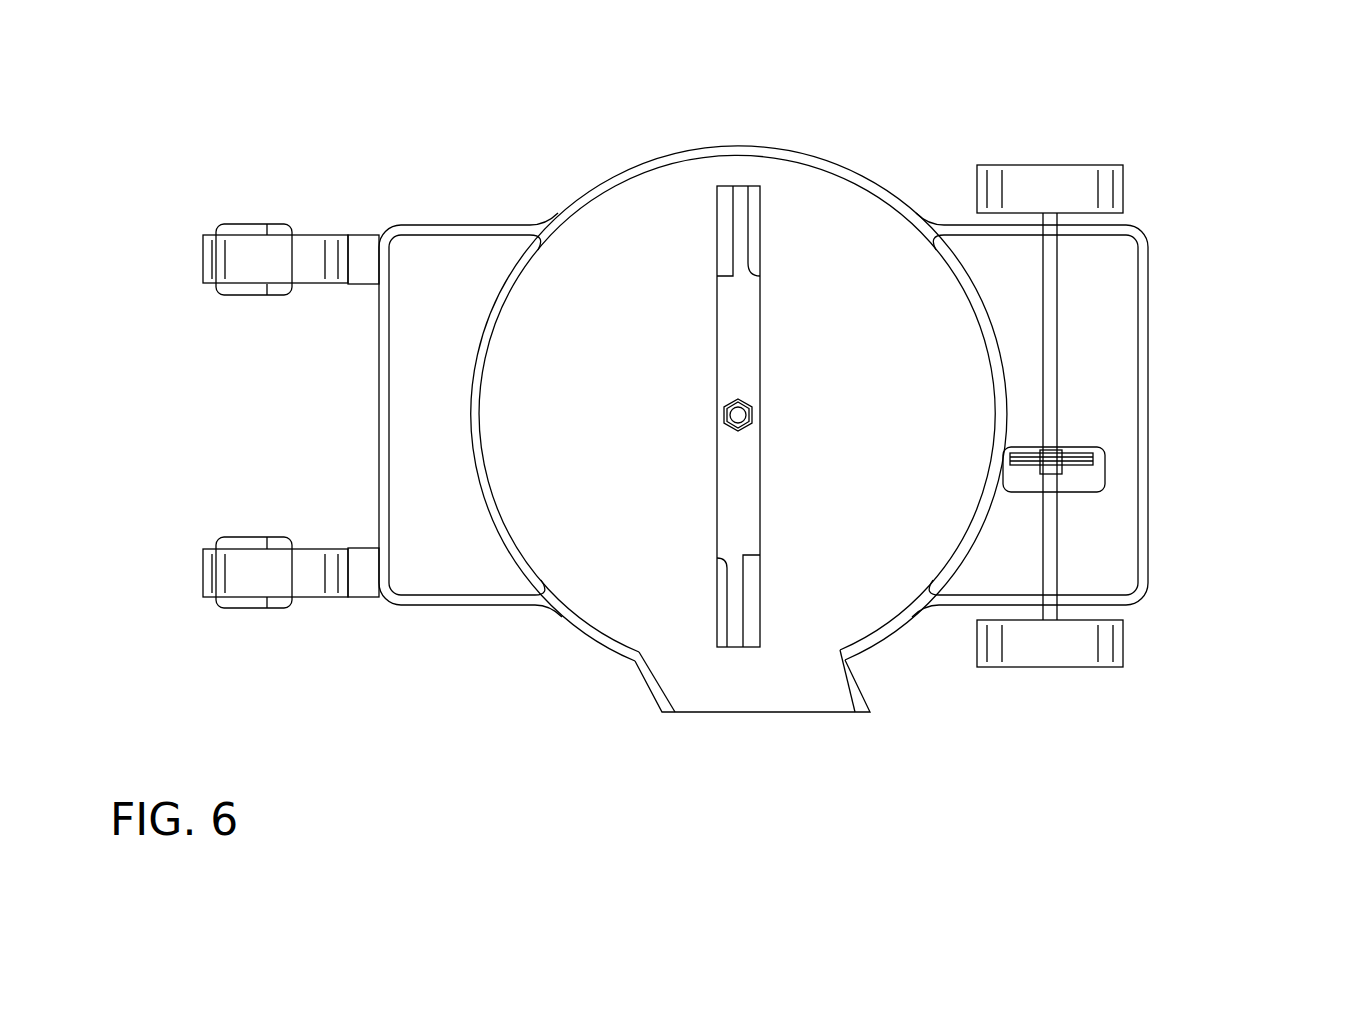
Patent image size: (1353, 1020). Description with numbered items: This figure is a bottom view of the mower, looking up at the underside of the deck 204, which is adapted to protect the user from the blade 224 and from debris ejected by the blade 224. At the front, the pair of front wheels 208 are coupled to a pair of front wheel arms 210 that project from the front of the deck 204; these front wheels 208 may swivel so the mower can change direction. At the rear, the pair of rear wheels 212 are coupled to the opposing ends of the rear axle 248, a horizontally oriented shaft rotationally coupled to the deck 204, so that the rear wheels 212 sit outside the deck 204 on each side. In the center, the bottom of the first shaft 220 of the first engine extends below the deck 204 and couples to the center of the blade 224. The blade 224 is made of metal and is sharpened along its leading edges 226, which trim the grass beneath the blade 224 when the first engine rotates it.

The deck 204 is at (467, 232).
The pair of front wheels 208 is at (247, 257).
The pair of front wheel arms 210 is at (367, 248).
The pair of rear wheels 212 is at (1105, 188).
The first shaft 220 is at (733, 418).
The blade 224 is at (752, 315).
The leading edges 226 is at (722, 217).
The rear axle 248 is at (1054, 343).